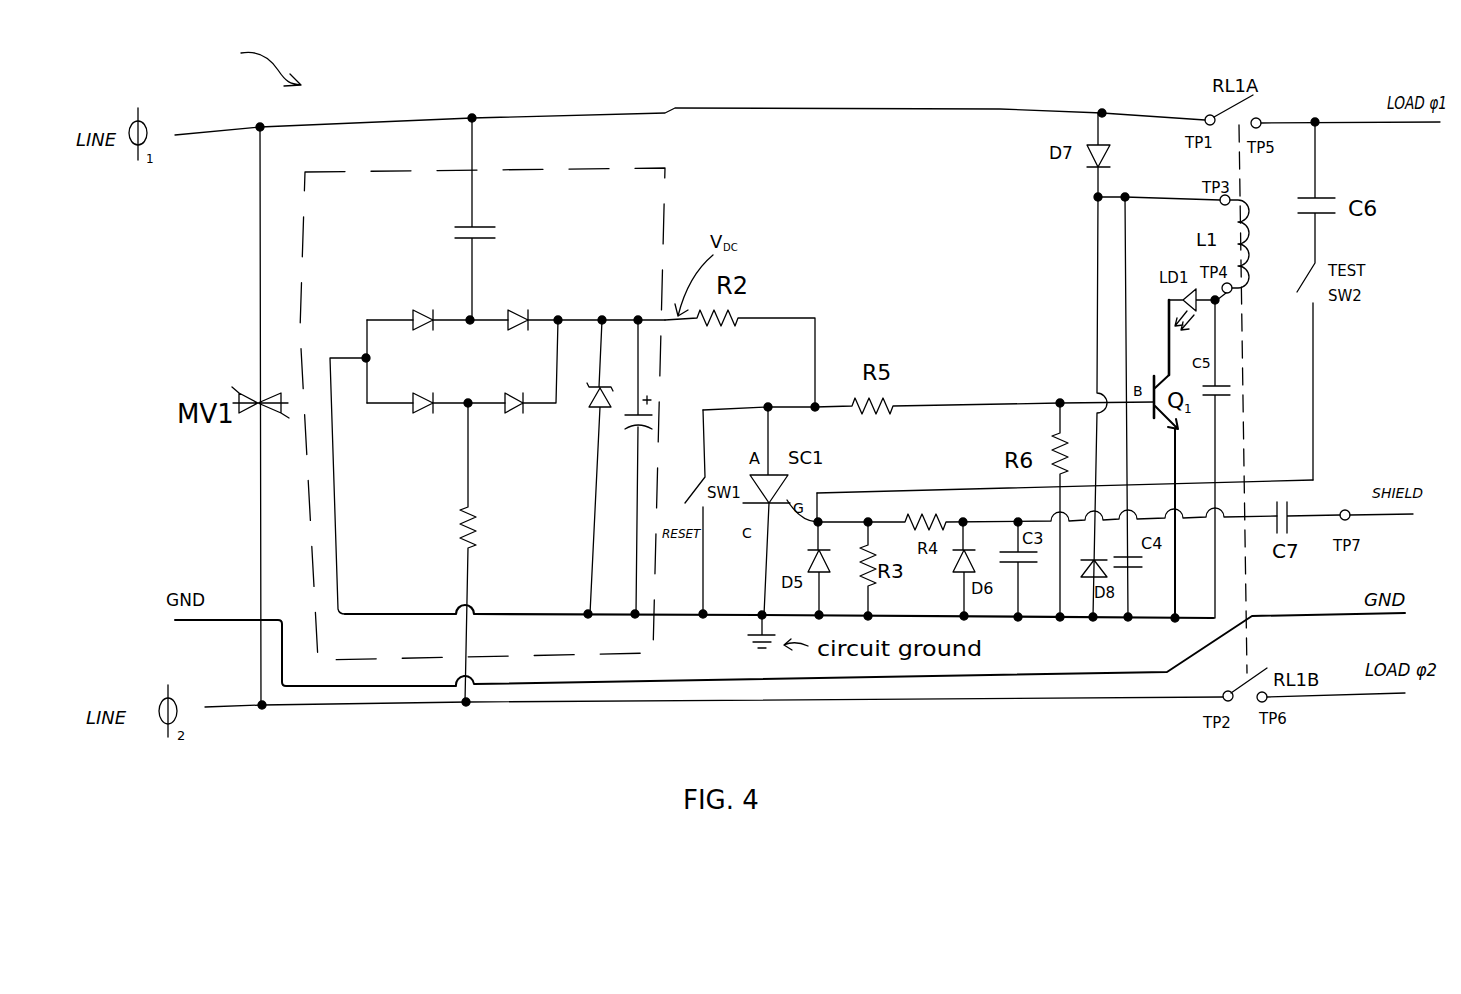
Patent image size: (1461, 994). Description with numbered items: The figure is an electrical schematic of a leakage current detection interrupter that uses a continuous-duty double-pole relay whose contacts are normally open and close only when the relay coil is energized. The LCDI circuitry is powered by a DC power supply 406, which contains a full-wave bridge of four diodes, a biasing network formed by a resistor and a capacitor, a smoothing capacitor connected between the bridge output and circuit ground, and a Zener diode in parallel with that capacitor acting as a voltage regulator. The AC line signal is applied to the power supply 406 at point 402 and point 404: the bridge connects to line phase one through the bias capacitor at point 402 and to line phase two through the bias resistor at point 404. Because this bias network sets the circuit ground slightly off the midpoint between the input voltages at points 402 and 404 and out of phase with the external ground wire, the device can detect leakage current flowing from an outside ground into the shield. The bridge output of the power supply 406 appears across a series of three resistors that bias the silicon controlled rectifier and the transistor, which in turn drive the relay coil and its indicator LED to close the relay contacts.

The point 402 is at (472, 118).
The point 404 is at (465, 702).
The DC power supply 406 is at (665, 190).